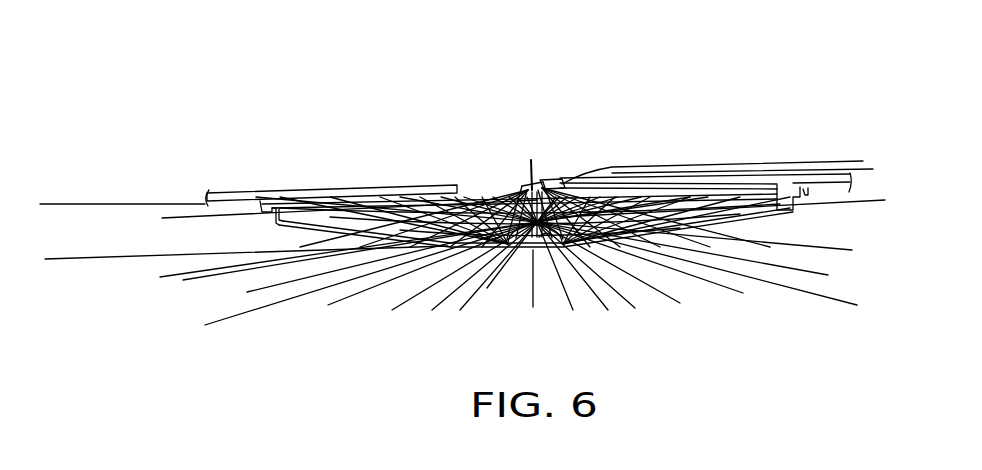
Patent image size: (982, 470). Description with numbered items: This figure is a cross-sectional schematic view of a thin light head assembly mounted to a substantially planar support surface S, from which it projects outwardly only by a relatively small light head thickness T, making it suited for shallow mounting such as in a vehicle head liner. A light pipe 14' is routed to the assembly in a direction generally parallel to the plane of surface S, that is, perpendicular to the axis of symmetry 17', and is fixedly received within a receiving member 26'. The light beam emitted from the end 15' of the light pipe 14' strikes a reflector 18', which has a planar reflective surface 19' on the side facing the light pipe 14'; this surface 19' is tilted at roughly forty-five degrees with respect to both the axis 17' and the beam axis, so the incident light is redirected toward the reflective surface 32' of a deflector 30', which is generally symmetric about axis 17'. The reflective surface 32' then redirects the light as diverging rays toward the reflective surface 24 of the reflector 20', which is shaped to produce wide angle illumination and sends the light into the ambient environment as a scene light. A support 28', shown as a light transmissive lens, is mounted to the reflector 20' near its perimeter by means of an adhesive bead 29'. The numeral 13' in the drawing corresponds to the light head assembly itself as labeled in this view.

The light head thickness T is at (60, 170).
The support surface S is at (228, 200).
The cover plate 13' is at (338, 147).
The reflector 20' is at (254, 166).
The lens body 24 is at (340, 221).
The planar reflective surface 19' is at (498, 168).
The reflector 18' is at (526, 157).
The axis of symmetry 17' is at (552, 143).
The receiving member 26' is at (567, 143).
The end of light pipe 15' is at (705, 153).
The light pipe 14' is at (722, 146).
The adhesive bead 29' is at (796, 151).
The deflector 30' is at (535, 300).
The support 28' is at (434, 287).
The reflective surface 32' is at (570, 278).